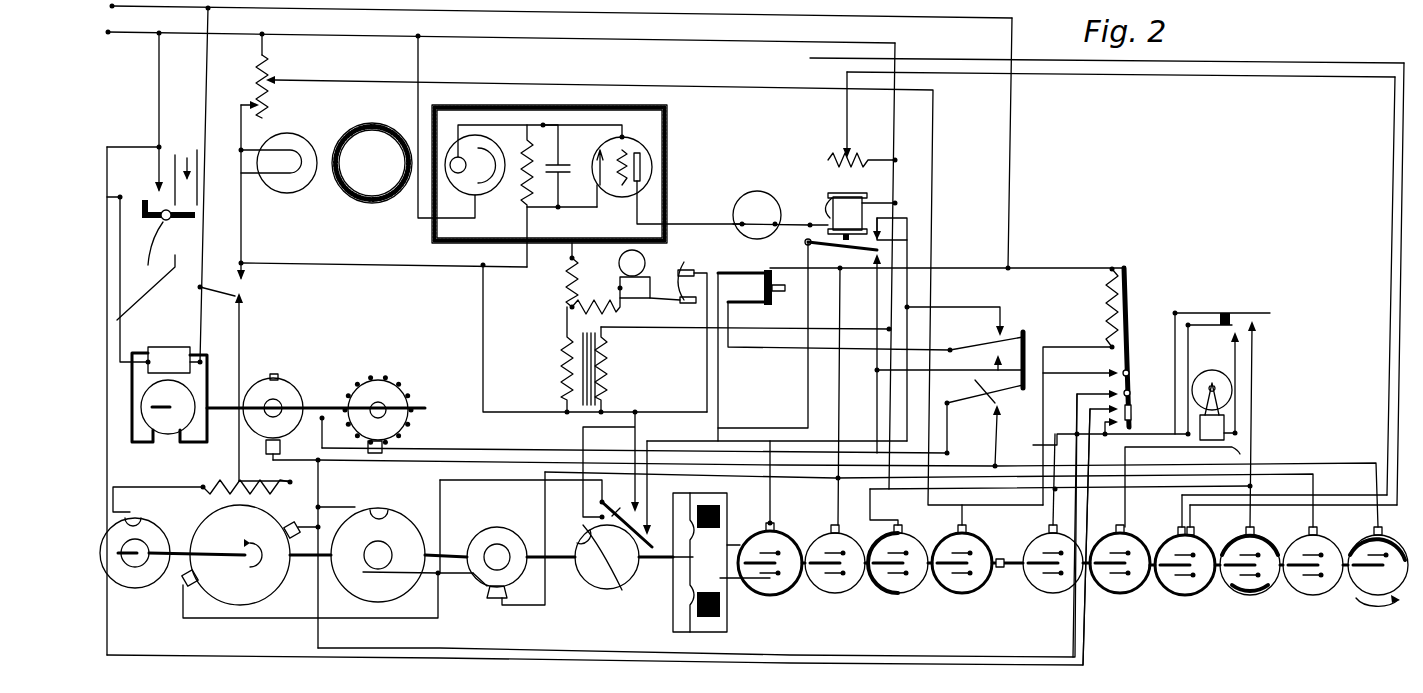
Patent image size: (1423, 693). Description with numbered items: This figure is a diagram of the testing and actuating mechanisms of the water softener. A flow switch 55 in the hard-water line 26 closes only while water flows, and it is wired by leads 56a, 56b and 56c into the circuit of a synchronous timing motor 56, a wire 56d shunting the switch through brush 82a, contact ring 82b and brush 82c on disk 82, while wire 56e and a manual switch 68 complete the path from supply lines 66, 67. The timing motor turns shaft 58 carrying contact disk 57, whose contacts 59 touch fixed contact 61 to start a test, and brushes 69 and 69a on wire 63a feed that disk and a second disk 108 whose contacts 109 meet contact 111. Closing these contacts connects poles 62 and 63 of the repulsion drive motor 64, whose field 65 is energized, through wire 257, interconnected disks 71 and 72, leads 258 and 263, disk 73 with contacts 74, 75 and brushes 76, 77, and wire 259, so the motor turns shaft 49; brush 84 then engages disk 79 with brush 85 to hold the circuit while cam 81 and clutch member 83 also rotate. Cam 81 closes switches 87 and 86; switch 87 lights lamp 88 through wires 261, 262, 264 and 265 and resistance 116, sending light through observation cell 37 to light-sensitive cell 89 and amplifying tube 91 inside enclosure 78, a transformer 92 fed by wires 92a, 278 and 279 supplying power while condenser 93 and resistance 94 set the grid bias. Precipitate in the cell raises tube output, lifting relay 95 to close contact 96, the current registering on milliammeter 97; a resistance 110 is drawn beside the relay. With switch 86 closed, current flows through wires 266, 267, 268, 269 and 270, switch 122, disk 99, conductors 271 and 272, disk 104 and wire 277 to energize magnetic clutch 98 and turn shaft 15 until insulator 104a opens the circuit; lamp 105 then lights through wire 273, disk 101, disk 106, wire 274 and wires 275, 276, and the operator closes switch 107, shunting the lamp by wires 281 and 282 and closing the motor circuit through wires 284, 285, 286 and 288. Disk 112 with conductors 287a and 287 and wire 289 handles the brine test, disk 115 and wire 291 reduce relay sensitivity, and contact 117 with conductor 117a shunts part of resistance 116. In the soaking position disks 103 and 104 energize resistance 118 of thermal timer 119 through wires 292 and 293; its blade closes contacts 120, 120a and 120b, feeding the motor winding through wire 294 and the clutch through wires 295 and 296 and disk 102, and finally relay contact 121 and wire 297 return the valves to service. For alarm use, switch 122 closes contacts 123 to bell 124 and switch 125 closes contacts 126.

The electrical supply line 66 is at (445, 10).
The electrical supply line 67 is at (455, 36).
The resistance 116 is at (243, 76).
The wire 265 is at (244, 147).
The lamp 88 is at (292, 135).
The lead 56a is at (158, 97).
The wire 56d is at (107, 172).
The wire 56c is at (240, 160).
The flow switch 55 is at (166, 207).
The wire 264 is at (242, 222).
The observation cell 37 is at (345, 195).
The light sensitive cell 89 is at (452, 188).
The water line 26 is at (146, 287).
The wire 56b is at (140, 325).
The timing motor 56 is at (163, 346).
The manually operated switch 68 is at (246, 302).
The wire 56e is at (241, 327).
The contact disk 57 is at (262, 378).
The shaft 58 is at (220, 402).
The contacts 59 is at (280, 376).
The gear 108 is at (386, 380).
The contacts 109 is at (410, 395).
The fixed contact 61 is at (281, 447).
The brush 69a is at (324, 436).
The brush 69 is at (266, 452).
The field 65 is at (203, 481).
The brush 82c is at (135, 510).
The brush 82a is at (145, 515).
The contact disk 82 is at (160, 540).
The contact ring 82b is at (135, 588).
The motor pole 62 is at (307, 594).
The repulsion motor 64 is at (232, 598).
The motor pole 63 is at (293, 522).
The brush 84 is at (360, 510).
The contact disk 79 is at (402, 542).
The brush 85 is at (368, 575).
The wire 259 is at (340, 649).
The wire 63a is at (334, 466).
The contact 111 is at (384, 447).
The conductor 287a is at (500, 448).
The wire 257 is at (535, 462).
The wire 261 is at (633, 437).
The wire 262 is at (485, 373).
The wire 263 is at (338, 266).
The condenser 93 is at (570, 162).
The amplifying tube 91 is at (656, 150).
The enclosure 78 is at (672, 160).
The resistance 94 is at (522, 192).
The milliammeter 97 is at (742, 192).
The contacts 123 is at (682, 262).
The bell 124 is at (618, 288).
The switch 122 is at (737, 270).
The wire 92a is at (652, 328).
The transformer 92 is at (608, 376).
The wire 267 is at (720, 368).
The wire 268 is at (736, 428).
The resistor 110 is at (863, 119).
The wire 279 is at (898, 168).
The conductor 117a is at (931, 153).
The relay 95 is at (854, 206).
The wire 270 is at (897, 208).
The relay contact 96 is at (910, 225).
The relay contact 121 is at (885, 262).
The wire 278 is at (888, 292).
The wire 297 is at (857, 340).
The wire 295 is at (950, 353).
The contacts 126 is at (983, 422).
The wire 269 is at (808, 436).
The wire 273 is at (840, 436).
The wire 292 is at (1053, 267).
The wire 266 is at (960, 269).
The resistance 118 is at (1105, 305).
The switch 125 is at (1030, 337).
The wire 293 is at (1077, 415).
The contact 120b is at (1098, 382).
The contact 120a is at (1098, 403).
The contacts 120 is at (1100, 424).
The wire 276 is at (1097, 437).
The thermal timer 119 is at (1131, 300).
The wire 282 is at (1173, 345).
The wire 285 is at (1186, 375).
The wire 275 is at (1140, 427).
The switch 107 is at (1245, 310).
The wire 281 is at (1238, 350).
The wire 284 is at (1255, 373).
The lamp 105 is at (1224, 425).
The wire 274 is at (1240, 453).
The conductor 287 is at (1348, 461).
The wire 291 is at (1401, 168).
The wire 289 is at (1394, 210).
The contact 75 is at (492, 542).
The contact disk 73 is at (505, 533).
The brush 77 is at (485, 596).
The contact 74 is at (490, 600).
The brush 76 is at (505, 602).
The shaft 49 is at (556, 560).
The switch 87 is at (630, 507).
The switch 86 is at (607, 557).
The cam 81 is at (614, 592).
The clutch member 83 is at (672, 623).
The magnetic clutch 98 is at (722, 612).
The conductor 271 is at (740, 580).
The contact disk 99 is at (790, 590).
The contact disk 101 is at (850, 590).
The contact disk 102 is at (895, 595).
The contact disk 103 is at (960, 592).
The contact 117 is at (1002, 568).
The contact disk 104 is at (1050, 593).
The insulator 104a is at (1068, 540).
The contact disk 106 is at (1115, 592).
The shaft 15 is at (1172, 588).
The contact disk 115 is at (1193, 590).
The contact disk 72 is at (1252, 592).
The contact disk 71 is at (1307, 592).
The contact disk 112 is at (1362, 592).
The wire 288 is at (1362, 552).
The wire 296 is at (858, 513).
The conductor 272 is at (955, 540).
The wire 277 is at (1012, 490).
The lead 258 is at (1151, 480).
The wire 286 is at (856, 658).
The wire 294 is at (983, 665).